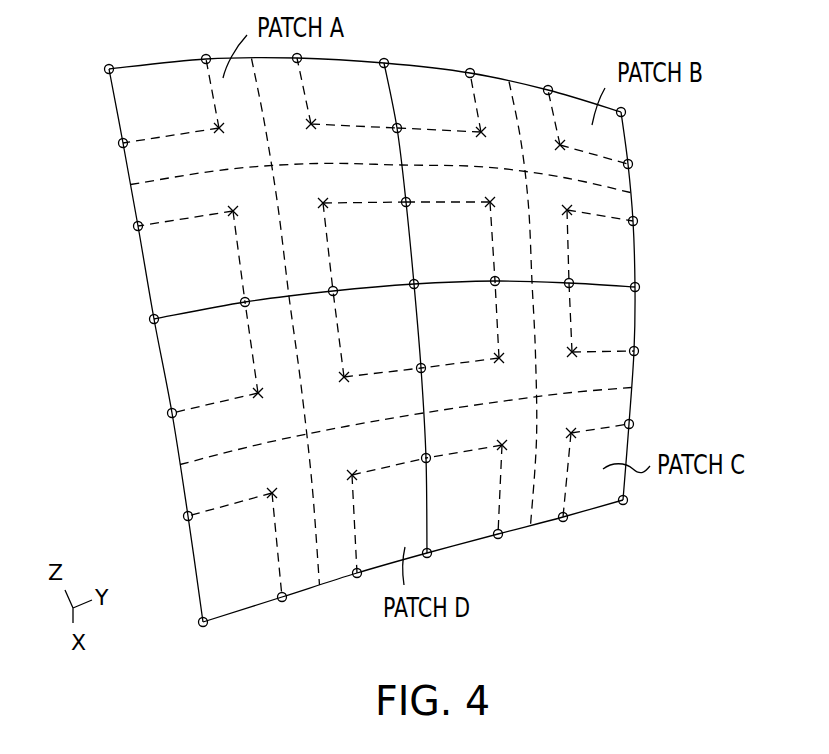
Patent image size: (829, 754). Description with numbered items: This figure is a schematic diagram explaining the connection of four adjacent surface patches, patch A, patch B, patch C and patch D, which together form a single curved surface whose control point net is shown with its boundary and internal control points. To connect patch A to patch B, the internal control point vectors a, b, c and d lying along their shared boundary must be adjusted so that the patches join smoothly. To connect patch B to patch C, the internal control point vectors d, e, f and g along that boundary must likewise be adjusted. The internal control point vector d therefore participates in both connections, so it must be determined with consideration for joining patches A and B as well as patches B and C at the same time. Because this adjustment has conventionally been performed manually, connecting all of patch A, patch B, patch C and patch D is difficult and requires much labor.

The internal control point vector a is at (312, 123).
The internal control point vector b is at (324, 202).
The internal control point vector c is at (482, 131).
The internal control point vector d is at (492, 202).
The internal control point vector e is at (569, 210).
The internal control point vector f is at (500, 358).
The internal control point vector g is at (574, 352).